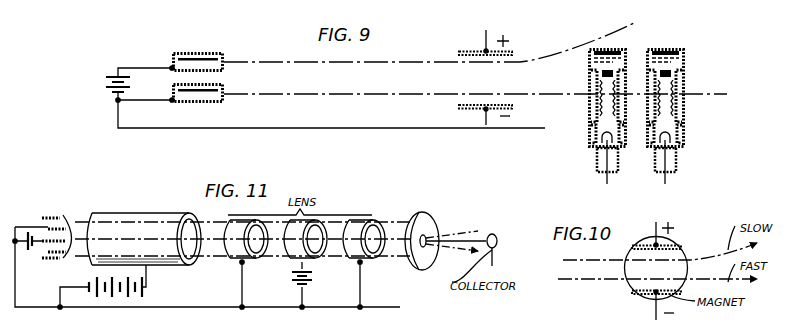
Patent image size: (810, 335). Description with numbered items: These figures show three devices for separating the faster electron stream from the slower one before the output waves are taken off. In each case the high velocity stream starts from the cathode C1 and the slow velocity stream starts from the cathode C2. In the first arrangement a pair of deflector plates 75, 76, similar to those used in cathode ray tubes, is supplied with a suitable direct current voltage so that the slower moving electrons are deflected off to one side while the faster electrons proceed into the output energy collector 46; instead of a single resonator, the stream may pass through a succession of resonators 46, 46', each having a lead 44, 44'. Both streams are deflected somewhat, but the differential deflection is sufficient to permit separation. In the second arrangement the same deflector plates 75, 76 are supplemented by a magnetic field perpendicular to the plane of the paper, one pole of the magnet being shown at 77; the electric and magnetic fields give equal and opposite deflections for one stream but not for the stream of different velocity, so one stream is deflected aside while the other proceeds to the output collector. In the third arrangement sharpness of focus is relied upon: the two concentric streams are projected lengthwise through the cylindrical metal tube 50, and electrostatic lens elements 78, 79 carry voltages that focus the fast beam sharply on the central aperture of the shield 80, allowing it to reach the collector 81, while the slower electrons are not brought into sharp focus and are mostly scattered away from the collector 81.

In FIG. 9, the cathode for high velocity stream C1 is at (198, 52).
In FIG. 11, the cathode for high velocity stream C1 is at (70, 228).
In FIG. 9, the cathode for slow velocity stream C2 is at (200, 102).
In FIG. 11, the cathode for slow velocity stream C2 is at (50, 217).
In FIG. 9, the deflector plate 75 is at (470, 50).
In FIG. 10, the deflector plate 75 is at (668, 245).
In FIG. 9, the deflector plate 76 is at (466, 110).
In FIG. 10, the deflector plate 76 is at (641, 296).
In FIG. 10, the magnet pole 77 is at (648, 245).
In FIG. 9, the output energy collector / resonator 46 is at (622, 110).
In FIG. 9, the resonator 46' is at (683, 110).
In FIG. 9, the detector lead 44 is at (624, 167).
In FIG. 9, the second detector lead 44' is at (689, 167).
In FIG. 11, the elongated cylindrical metal tube 50 is at (144, 218).
In FIG. 11, the lens element 78 is at (290, 259).
In FIG. 11, the lens element 79 is at (233, 261).
In FIG. 11, the shield with central aperture 80 is at (420, 263).
In FIG. 11, the collector 81 is at (494, 235).